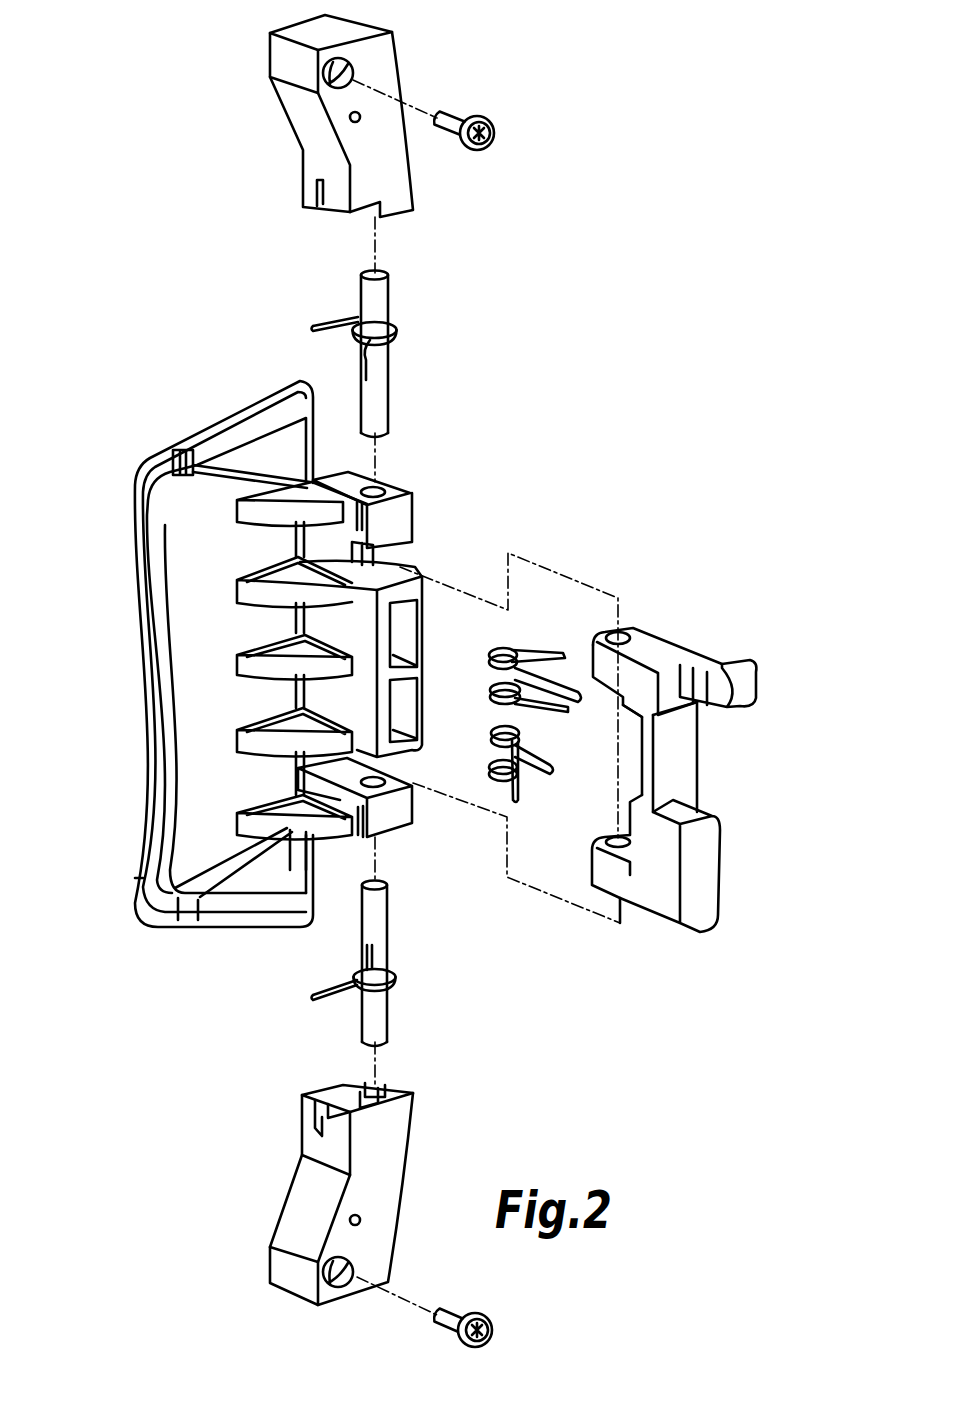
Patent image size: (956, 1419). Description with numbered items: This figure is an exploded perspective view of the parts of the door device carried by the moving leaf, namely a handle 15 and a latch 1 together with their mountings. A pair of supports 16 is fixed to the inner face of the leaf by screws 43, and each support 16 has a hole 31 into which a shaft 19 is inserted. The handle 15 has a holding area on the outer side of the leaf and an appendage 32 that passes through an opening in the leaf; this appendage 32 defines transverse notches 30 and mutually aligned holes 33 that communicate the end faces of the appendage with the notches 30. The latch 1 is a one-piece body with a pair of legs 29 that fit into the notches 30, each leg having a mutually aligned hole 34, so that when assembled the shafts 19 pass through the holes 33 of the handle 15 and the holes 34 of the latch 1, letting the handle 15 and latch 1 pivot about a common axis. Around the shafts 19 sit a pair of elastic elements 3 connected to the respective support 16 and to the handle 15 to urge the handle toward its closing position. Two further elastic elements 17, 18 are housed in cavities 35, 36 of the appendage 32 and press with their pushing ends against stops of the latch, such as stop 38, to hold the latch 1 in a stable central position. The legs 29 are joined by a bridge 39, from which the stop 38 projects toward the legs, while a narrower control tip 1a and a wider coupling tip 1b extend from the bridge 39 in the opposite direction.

The latch 1 is at (667, 758).
The control tip 1a is at (740, 660).
The coupling tip 1b is at (713, 873).
The elastic elements 3 is at (395, 322).
The handle 15 is at (142, 703).
The supports 16 is at (393, 73).
The elastic element 17 is at (512, 650).
The elastic element 18 is at (528, 733).
The shafts 19 is at (365, 297).
The legs 29 is at (648, 647).
The transverse notches 30 is at (393, 547).
The hole 31 is at (370, 1083).
The appendage 32 is at (410, 670).
The holes 33 is at (376, 486).
The holes 34 is at (625, 632).
The cavity 35 is at (410, 615).
The cavity 36 is at (405, 703).
The stop 38 is at (627, 820).
The bridge 39 is at (693, 753).
The screws 43 is at (453, 107).